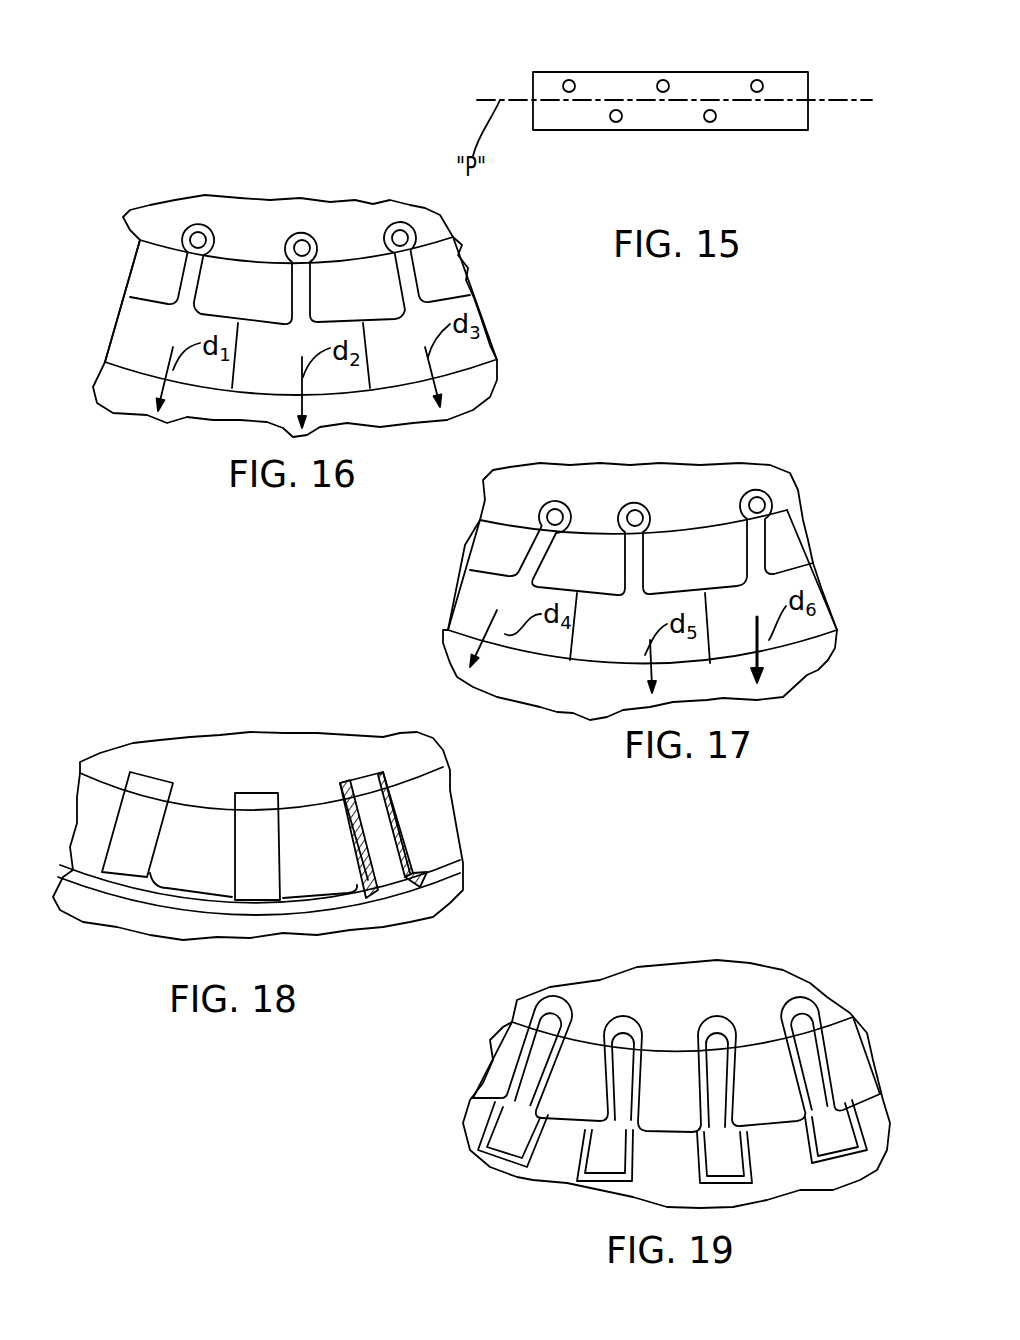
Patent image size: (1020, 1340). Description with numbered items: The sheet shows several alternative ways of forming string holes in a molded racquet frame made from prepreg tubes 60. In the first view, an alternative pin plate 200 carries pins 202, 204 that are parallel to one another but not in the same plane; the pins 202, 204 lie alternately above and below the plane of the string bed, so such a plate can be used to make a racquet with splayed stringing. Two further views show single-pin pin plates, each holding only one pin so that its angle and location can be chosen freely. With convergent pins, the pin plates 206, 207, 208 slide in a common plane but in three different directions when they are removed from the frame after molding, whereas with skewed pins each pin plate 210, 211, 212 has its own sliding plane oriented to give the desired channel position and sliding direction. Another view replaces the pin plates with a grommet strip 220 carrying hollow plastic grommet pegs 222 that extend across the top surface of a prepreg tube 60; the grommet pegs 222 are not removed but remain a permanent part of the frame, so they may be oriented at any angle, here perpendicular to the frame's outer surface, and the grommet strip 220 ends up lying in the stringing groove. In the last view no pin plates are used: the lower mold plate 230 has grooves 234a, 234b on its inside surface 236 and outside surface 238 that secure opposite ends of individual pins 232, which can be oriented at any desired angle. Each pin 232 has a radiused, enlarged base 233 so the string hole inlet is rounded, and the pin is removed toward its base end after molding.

In FIG. 16, the prepreg tube 60 is at (253, 273).
In FIG. 17, the prepreg tube 60 is at (710, 543).
In FIG. 18, the prepreg tube 60 is at (443, 812).
In FIG. 19, the prepreg tube 60 is at (858, 1073).
In FIG. 15, the pin plate 200 is at (747, 130).
In FIG. 15, the pin 202 is at (600, 72).
In FIG. 15, the pin 204 is at (622, 124).
In FIG. 16, the pin plate 206 is at (130, 333).
In FIG. 16, the pin plate 207 is at (251, 370).
In FIG. 16, the pin plate 208 is at (480, 347).
In FIG. 17, the pin plate 210 is at (468, 600).
In FIG. 17, the pin plate 211 is at (554, 704).
In FIG. 17, the pin plate 212 is at (820, 620).
In FIG. 18, the grommet strip 220 is at (330, 902).
In FIG. 18, the grommet pegs 222 is at (231, 813).
In FIG. 19, the lower mold plate 230 is at (767, 977).
In FIG. 19, the pin 232 is at (600, 1052).
In FIG. 19, the base 233 is at (503, 1100).
In FIG. 19, the groove 234a is at (548, 998).
In FIG. 19, the groove 234b is at (520, 1167).
In FIG. 19, the inside surface 236 is at (654, 1012).
In FIG. 19, the outside surface 238 is at (646, 1198).